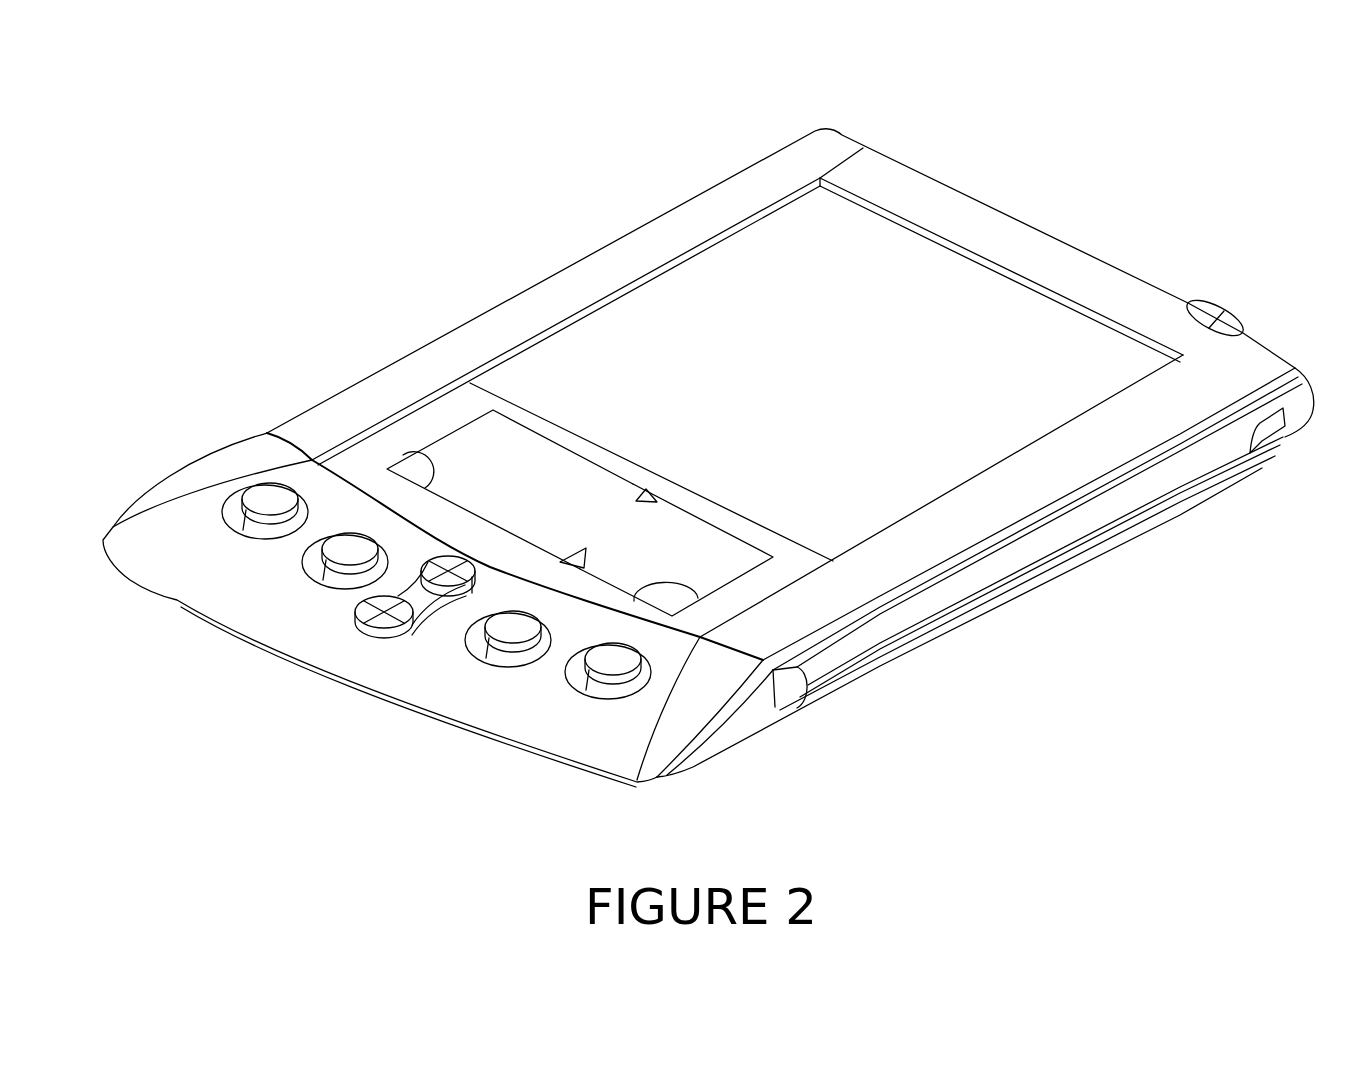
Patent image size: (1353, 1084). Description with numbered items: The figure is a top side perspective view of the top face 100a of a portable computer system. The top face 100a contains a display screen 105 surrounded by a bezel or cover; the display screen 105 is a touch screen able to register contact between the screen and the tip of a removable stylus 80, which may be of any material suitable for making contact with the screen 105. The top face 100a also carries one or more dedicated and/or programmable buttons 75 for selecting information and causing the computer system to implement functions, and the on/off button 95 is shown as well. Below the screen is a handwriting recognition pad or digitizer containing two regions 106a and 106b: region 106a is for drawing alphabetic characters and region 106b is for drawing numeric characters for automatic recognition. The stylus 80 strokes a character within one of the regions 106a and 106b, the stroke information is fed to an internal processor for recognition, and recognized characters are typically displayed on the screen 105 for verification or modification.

The top face 100a is at (128, 90).
The buttons 75 is at (264, 486).
The stylus 80 is at (1168, 470).
The on/off button 95 is at (1210, 301).
The display screen 105 is at (889, 307).
The region 106a is at (531, 490).
The region 106b is at (693, 570).